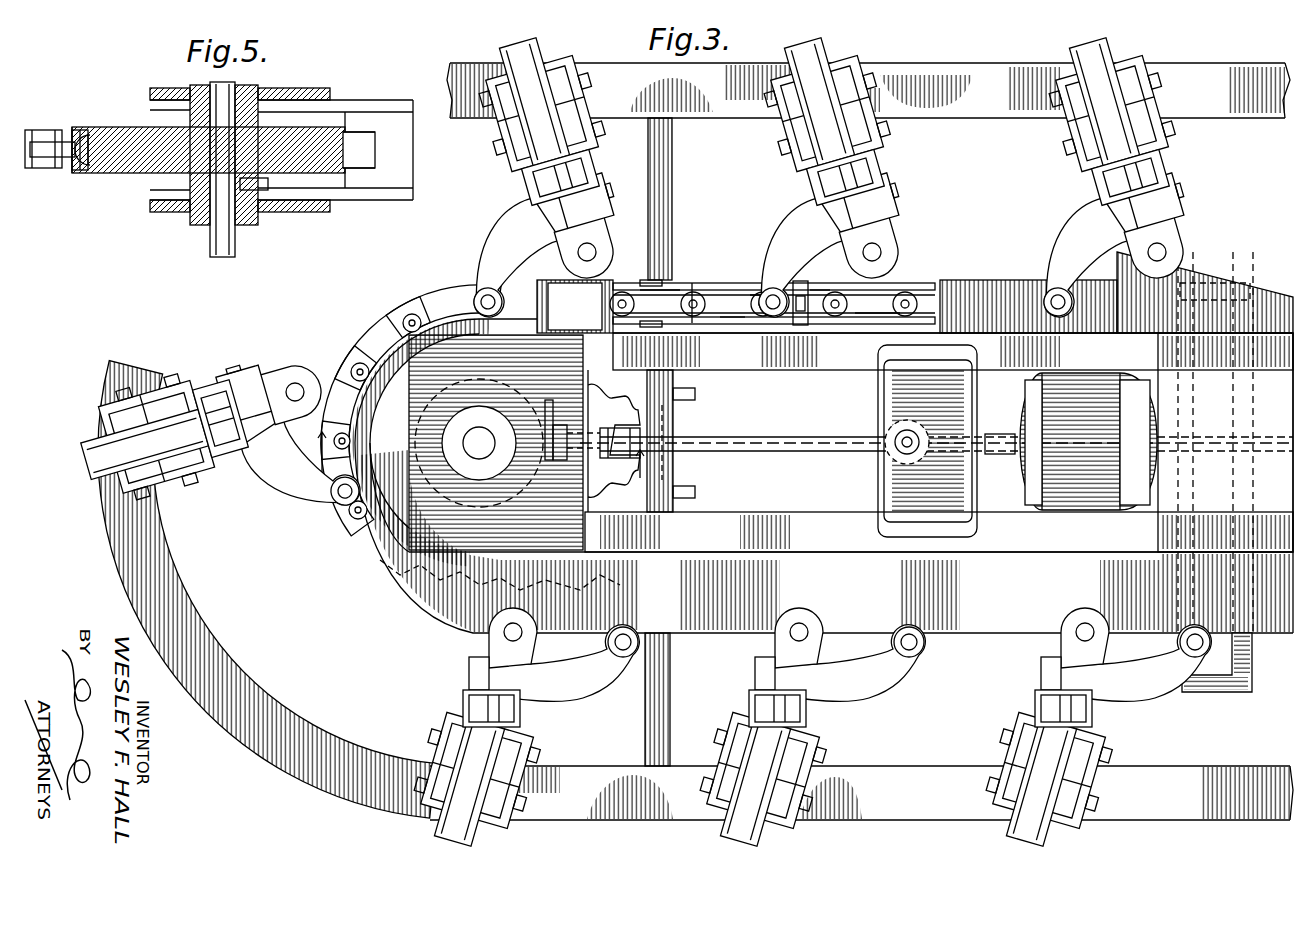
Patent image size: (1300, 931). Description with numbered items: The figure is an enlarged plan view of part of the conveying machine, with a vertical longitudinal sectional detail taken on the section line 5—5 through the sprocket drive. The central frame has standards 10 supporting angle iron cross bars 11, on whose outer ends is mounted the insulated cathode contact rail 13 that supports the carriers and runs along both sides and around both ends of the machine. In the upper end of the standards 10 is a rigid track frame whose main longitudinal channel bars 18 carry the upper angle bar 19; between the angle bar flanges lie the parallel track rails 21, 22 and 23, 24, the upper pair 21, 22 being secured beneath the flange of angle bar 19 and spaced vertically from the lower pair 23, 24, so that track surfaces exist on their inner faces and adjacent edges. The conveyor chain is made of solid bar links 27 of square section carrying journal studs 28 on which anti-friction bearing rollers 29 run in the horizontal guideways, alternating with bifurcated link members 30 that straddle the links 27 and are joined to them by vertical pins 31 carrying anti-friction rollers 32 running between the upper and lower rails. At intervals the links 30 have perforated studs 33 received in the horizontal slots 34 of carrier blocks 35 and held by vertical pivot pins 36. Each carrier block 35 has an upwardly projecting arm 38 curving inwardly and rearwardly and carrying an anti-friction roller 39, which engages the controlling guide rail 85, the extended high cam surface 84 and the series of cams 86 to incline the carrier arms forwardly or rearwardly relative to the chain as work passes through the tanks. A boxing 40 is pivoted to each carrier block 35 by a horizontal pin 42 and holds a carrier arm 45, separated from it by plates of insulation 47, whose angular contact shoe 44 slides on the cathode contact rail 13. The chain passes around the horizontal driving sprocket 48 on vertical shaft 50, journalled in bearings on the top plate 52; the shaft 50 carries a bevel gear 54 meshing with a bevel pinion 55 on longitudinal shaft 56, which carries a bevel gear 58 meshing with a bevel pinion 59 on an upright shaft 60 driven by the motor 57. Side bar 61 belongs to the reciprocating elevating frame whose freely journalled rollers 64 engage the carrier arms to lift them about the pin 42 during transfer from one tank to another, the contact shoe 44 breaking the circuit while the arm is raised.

In FIG. 3, the section line 5 is at (318, 458).
In FIG. 3, the standards 10 is at (678, 405).
In FIG. 3, the angle iron cross bars 11 is at (673, 172).
In FIG. 3, the cathode contact rail 13 is at (965, 68).
In FIG. 5, the main longitudinal channel bars 18 is at (392, 200).
In FIG. 3, the main longitudinal channel bars 18 is at (795, 520).
In FIG. 3, the upper angle bar 19 is at (575, 306).
In FIG. 3, the track rail 21 is at (675, 325).
In FIG. 3, the track rail 22 is at (693, 290).
In FIG. 3, the track rail 23 is at (735, 312).
In FIG. 3, the track rail 24 is at (795, 290).
In FIG. 3, the solid bar links 27 is at (645, 312).
In FIG. 3, the journal studs 28 is at (818, 325).
In FIG. 3, the anti-friction bearing rollers 29 is at (805, 296).
In FIG. 3, the bifurcated link members 30 is at (860, 310).
In FIG. 3, the vertical pins 31 is at (765, 317).
In FIG. 5, the anti-friction rollers 32 is at (82, 130).
In FIG. 3, the anti-friction rollers 32 is at (670, 300).
In FIG. 5, the perforated studs 33 is at (74, 165).
In FIG. 3, the perforated studs 33 is at (565, 280).
In FIG. 5, the horizontal slots 34 is at (48, 130).
In FIG. 3, the carrier block 35 is at (598, 240).
In FIG. 5, the vertical pivot pins 36 is at (55, 160).
In FIG. 3, the vertical pivot pins 36 is at (590, 252).
In FIG. 3, the upwardly projecting arm 38 is at (520, 218).
In FIG. 3, the anti-friction roller 39 is at (478, 292).
In FIG. 3, the boxing 40 is at (578, 152).
In FIG. 3, the horizontal pin 42 is at (603, 196).
In FIG. 3, the contact shoe 44 is at (562, 58).
In FIG. 3, the carrier arm 45 is at (517, 45).
In FIG. 3, the plates of insulation 47 is at (515, 133).
In FIG. 5, the driving sprocket 48 is at (132, 175).
In FIG. 3, the driving sprocket 48 is at (385, 335).
In FIG. 5, the vertical shaft 50 is at (236, 242).
In FIG. 3, the vertical shaft 50 is at (477, 455).
In FIG. 5, the top plate 52 is at (305, 90).
In FIG. 3, the top plate 52 is at (530, 378).
In FIG. 3, the bevel gear 54 is at (478, 380).
In FIG. 3, the bevel pinion 55 is at (551, 470).
In FIG. 3, the longitudinal shaft 56 is at (735, 453).
In FIG. 3, the motor 57 is at (1110, 400).
In FIG. 3, the bevel gear 58 is at (880, 402).
In FIG. 3, the bevel pinion 59 is at (918, 425).
In FIG. 3, the upright shaft 60 is at (910, 450).
In FIG. 3, the side bar 61 is at (1165, 352).
In FIG. 3, the rollers 64 is at (1230, 285).
In FIG. 3, the high cam surface 84 is at (425, 600).
In FIG. 3, the controlling guide rail 85 is at (365, 437).
In FIG. 3, the cams 86 is at (1205, 292).